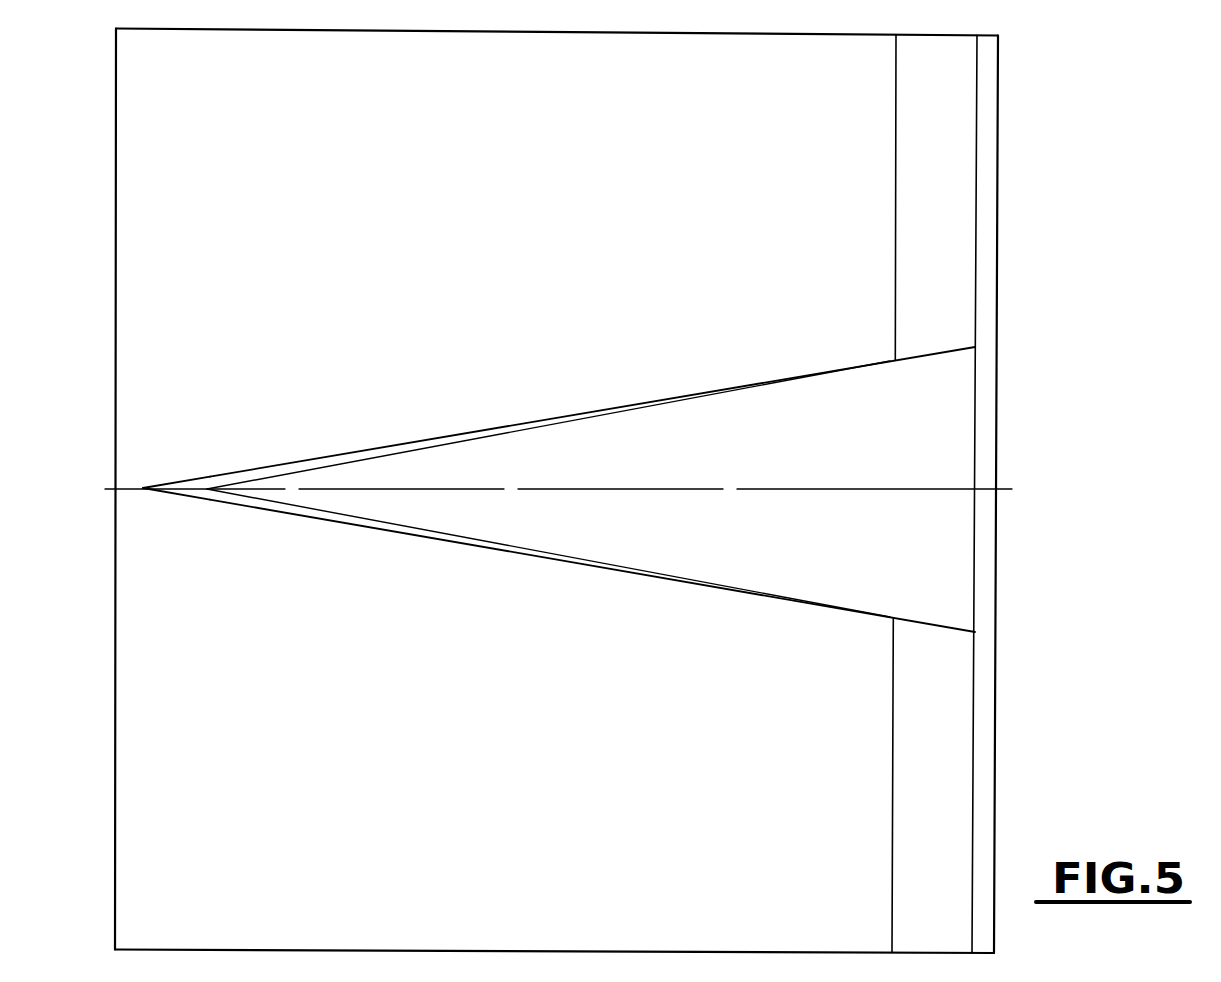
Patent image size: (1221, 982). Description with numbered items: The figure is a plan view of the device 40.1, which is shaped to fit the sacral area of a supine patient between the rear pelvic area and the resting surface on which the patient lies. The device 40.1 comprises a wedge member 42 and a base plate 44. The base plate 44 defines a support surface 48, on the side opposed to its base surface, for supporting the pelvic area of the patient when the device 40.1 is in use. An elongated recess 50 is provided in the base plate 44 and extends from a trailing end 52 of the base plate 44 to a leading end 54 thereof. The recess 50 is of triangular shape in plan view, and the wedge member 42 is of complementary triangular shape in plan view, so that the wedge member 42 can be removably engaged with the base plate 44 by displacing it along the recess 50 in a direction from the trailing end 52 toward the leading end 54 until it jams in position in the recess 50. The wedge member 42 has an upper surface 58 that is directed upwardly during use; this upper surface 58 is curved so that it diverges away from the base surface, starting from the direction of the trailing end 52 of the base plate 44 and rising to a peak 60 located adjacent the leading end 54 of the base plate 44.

The device 40.1 is at (1019, 286).
The wedge member 42 is at (376, 442).
The base plate 44 is at (609, 952).
The support surface 48 is at (688, 139).
The elongated recess 50 is at (669, 393).
The trailing end 52 is at (995, 700).
The leading end 54 is at (115, 692).
The upper surface 58 is at (636, 468).
The peak 60 is at (189, 485).